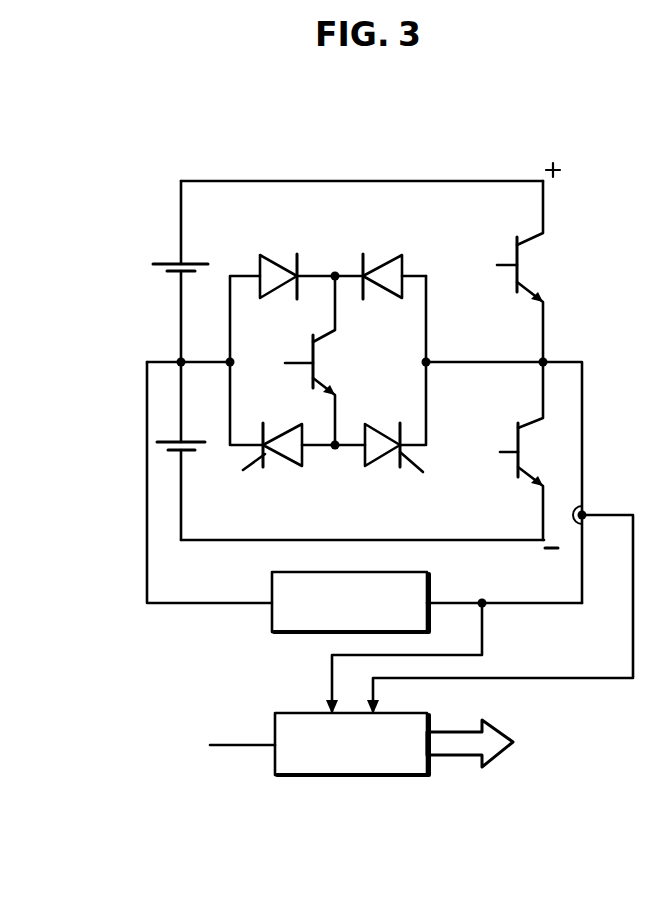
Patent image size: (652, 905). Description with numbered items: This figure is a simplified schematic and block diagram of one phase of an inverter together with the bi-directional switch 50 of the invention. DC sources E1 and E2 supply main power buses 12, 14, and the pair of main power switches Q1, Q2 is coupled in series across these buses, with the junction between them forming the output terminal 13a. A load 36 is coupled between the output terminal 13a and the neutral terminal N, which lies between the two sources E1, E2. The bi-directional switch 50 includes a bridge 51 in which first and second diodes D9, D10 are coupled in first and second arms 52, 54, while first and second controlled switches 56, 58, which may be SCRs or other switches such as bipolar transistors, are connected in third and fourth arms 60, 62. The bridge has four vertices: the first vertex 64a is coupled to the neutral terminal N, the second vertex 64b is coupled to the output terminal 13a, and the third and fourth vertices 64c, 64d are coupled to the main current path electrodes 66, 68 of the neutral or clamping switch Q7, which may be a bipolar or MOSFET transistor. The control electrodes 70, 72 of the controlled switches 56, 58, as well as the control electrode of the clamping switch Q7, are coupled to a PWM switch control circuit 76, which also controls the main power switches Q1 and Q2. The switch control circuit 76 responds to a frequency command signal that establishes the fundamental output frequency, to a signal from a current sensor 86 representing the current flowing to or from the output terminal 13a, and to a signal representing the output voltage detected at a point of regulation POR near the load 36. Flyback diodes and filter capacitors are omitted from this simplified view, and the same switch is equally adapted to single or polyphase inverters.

The main power bus 12 is at (468, 181).
The main power bus 14 is at (453, 539).
The output terminal 13a is at (547, 358).
The load 36 is at (429, 582).
The bi-directional switch 50 is at (348, 362).
The bridge 51 is at (428, 300).
The first arm 52 is at (244, 280).
The second arm 54 is at (412, 283).
The first controlled switch 56 is at (273, 445).
The second controlled switch 58 is at (405, 435).
The third arm 60 is at (230, 398).
The fourth arm 62 is at (428, 403).
The first vertex 64a is at (232, 360).
The second vertex 64b is at (430, 358).
The third vertex 64c is at (337, 272).
The fourth vertex 64d is at (335, 452).
The main current path electrode 66 is at (333, 300).
The main current path electrode 68 is at (287, 365).
The control electrode 70 is at (252, 472).
The control electrode 72 is at (415, 473).
The PWM switch control circuit 76 is at (292, 712).
The current sensor 86 is at (586, 510).
The main power switch Q1 is at (521, 286).
The main power switch Q2 is at (526, 432).
The neutral or clamping switch Q7 is at (313, 360).
The first diode D9 is at (277, 257).
The second diode D10 is at (404, 262).
The DC source E1 is at (164, 263).
The DC source E2 is at (191, 452).
The neutral terminal N is at (188, 373).
The point of regulation POR is at (485, 607).